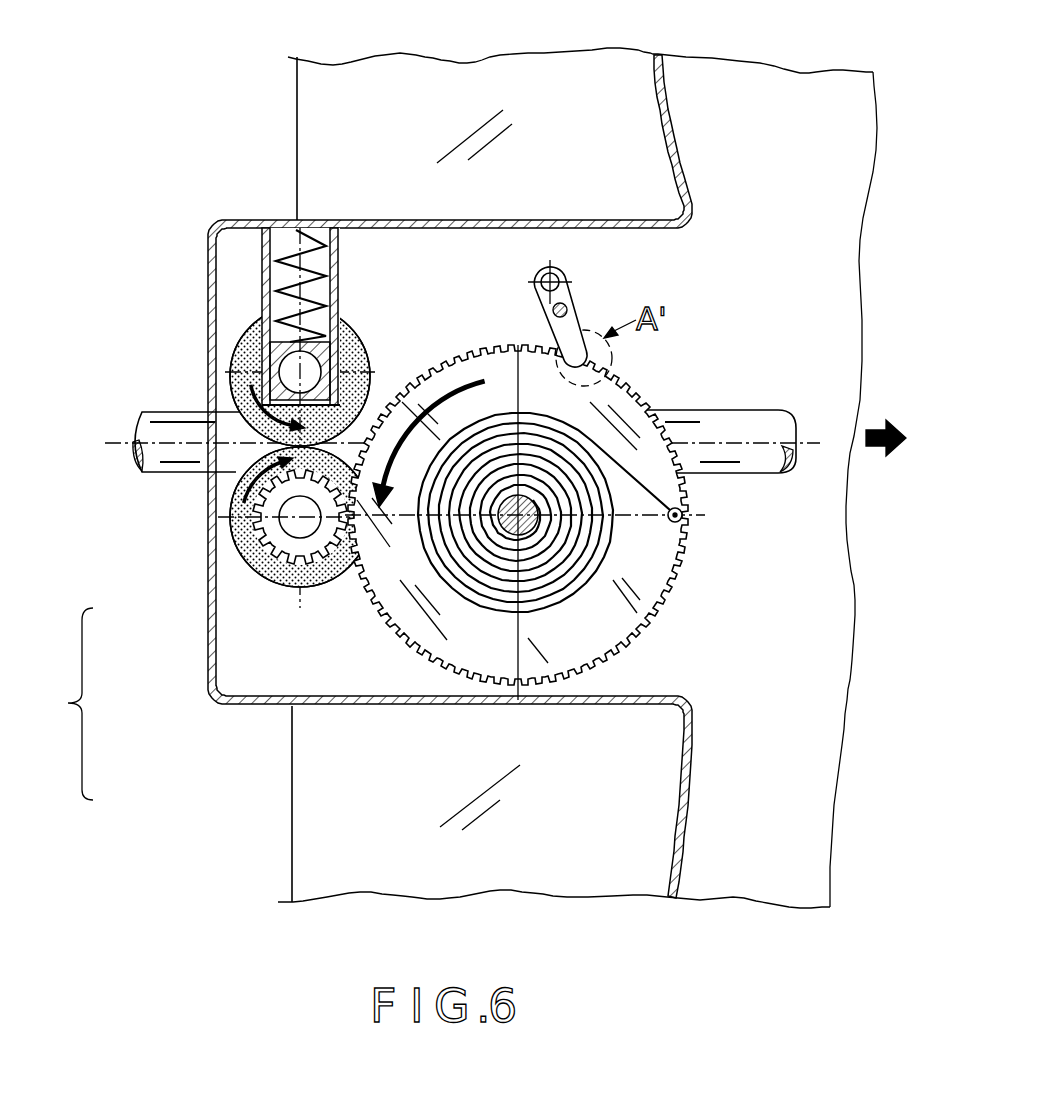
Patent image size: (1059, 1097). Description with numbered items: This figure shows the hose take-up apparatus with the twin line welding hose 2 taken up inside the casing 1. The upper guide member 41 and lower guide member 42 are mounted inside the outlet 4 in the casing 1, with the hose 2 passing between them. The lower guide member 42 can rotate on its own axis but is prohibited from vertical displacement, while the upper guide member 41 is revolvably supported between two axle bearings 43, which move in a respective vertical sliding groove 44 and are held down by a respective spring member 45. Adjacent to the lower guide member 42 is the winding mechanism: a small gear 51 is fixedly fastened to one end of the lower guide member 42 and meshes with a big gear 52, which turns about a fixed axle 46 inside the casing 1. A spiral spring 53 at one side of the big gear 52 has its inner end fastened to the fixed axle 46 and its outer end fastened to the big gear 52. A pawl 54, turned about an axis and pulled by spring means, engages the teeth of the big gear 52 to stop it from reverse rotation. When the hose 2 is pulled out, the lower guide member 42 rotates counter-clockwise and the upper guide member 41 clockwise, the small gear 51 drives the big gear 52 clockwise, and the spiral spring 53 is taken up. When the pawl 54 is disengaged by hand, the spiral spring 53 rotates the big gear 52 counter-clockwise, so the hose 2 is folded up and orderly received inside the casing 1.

The casing 1 is at (317, 90).
The twin line welding hose 2 is at (757, 425).
The outlet 4 is at (387, 252).
The upper guide member 41 is at (247, 383).
The lower guide member 42 is at (238, 537).
The axle bearings 43 is at (273, 343).
The vertical sliding groove 44 is at (262, 280).
The spring member 45 is at (288, 227).
The fixed axle 46 is at (533, 545).
The small gear 51 is at (262, 573).
The big gear 52 is at (390, 588).
The spiral spring 53 is at (478, 608).
The pawl 54 is at (560, 293).